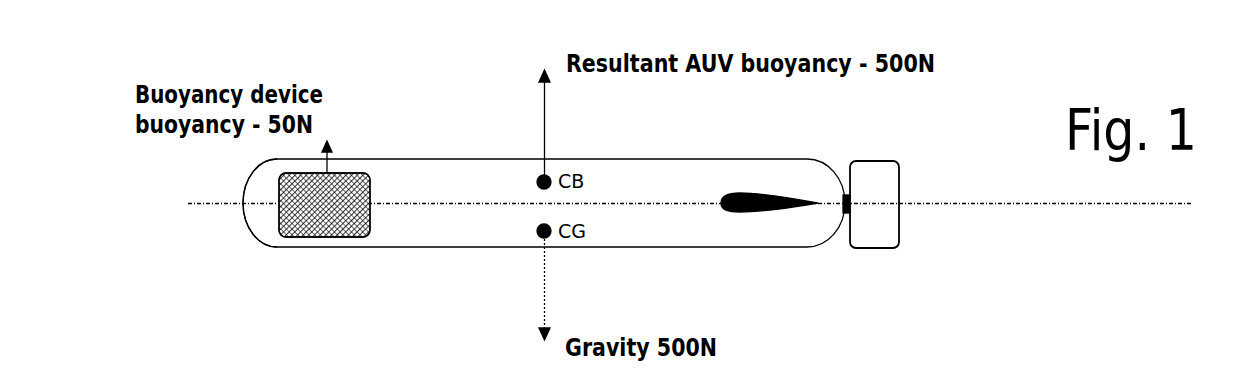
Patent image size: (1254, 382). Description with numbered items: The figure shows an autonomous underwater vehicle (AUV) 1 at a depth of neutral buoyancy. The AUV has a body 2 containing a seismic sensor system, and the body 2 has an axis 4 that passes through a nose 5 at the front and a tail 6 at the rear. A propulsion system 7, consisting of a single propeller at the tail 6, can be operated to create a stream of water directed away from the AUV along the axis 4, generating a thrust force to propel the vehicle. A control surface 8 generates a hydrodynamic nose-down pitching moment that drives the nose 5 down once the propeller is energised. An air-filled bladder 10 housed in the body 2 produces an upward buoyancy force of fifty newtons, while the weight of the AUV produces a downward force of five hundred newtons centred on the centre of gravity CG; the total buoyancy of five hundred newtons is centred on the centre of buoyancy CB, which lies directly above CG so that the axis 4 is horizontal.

The autonomous underwater vehicle (AUV) 1 is at (514, 230).
The body 2 is at (459, 158).
The axis 4 is at (1027, 203).
The nose 5 is at (243, 203).
The tail 6 is at (899, 203).
The propulsion system 7 is at (880, 224).
The control surface 8 is at (753, 212).
The bladder 10 is at (305, 225).